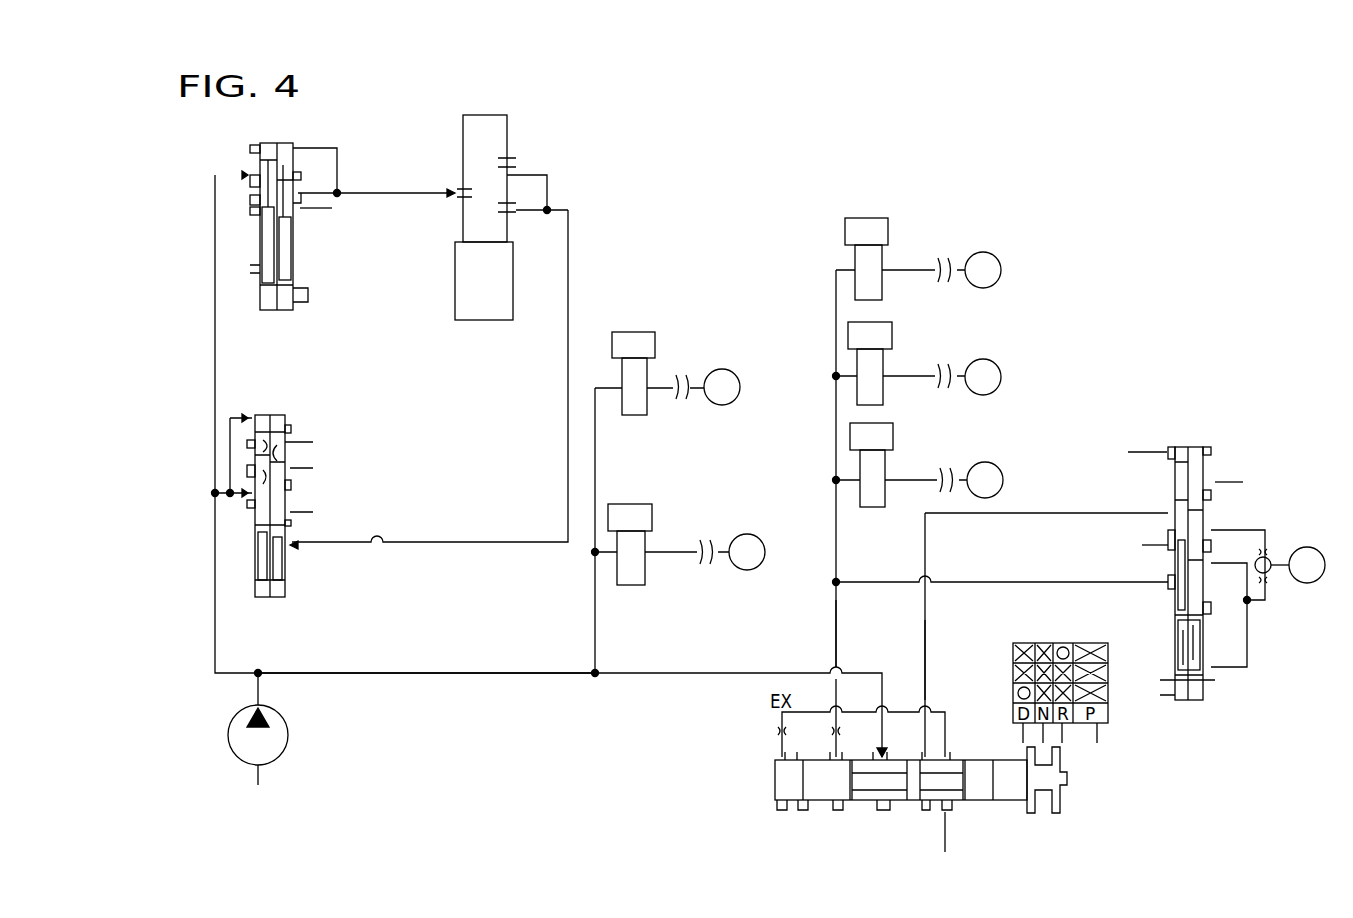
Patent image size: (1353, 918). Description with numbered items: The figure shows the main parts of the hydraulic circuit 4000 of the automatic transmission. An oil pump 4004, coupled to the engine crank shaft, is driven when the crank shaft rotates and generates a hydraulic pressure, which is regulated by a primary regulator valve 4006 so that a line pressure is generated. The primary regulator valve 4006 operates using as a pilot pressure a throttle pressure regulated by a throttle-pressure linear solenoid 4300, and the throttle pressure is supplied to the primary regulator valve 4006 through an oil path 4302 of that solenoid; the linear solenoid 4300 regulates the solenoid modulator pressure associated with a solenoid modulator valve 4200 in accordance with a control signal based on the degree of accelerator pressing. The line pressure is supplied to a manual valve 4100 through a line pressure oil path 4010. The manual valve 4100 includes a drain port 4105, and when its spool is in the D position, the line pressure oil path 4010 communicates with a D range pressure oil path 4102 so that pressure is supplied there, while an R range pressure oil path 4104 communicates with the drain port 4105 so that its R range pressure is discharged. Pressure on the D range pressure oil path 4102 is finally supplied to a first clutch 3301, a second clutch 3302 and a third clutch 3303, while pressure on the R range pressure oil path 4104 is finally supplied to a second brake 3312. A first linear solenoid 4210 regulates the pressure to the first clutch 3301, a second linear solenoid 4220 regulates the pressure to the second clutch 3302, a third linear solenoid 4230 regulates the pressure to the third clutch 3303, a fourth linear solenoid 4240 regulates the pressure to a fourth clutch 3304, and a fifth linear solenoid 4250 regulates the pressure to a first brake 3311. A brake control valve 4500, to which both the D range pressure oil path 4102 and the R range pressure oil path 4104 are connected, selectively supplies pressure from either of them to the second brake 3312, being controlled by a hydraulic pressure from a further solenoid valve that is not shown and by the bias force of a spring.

The hydraulic circuit 4000 is at (809, 150).
The oil pump 4004 is at (287, 718).
The primary regulator valve 4006 is at (270, 597).
The line pressure oil path 4010 is at (290, 673).
The manual valve 4100 is at (767, 785).
The D range pressure oil path 4102 is at (837, 640).
The R range pressure oil path 4104 is at (925, 630).
The drain port 4105 is at (952, 813).
The solenoid modulator valve 4200 is at (275, 316).
The SL1 linear solenoid 4210 is at (888, 233).
The SL2 linear solenoid 4220 is at (892, 338).
The SL3 linear solenoid 4230 is at (893, 440).
The SL4 linear solenoid 4240 is at (628, 330).
The SL5 linear solenoid 4250 is at (652, 517).
The SLT linear solenoid 4300 is at (455, 267).
The SLT oil path 4302 is at (523, 545).
The B2 control valve 4500 is at (1222, 457).
The C1 clutch 3301 is at (979, 250).
The C2 clutch 3302 is at (981, 359).
The C3 clutch 3303 is at (981, 458).
The C4 clutch 3304 is at (713, 369).
The B1 brake 3311 is at (743, 533).
The B2 brake 3312 is at (1307, 583).